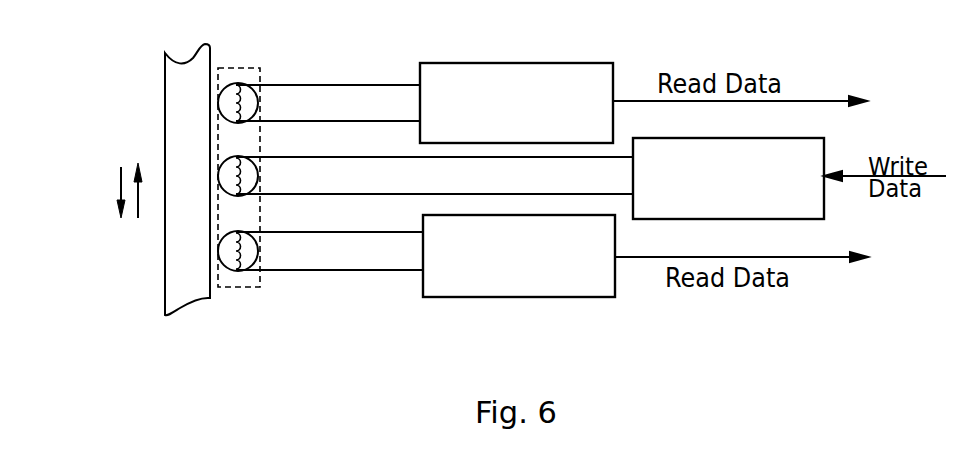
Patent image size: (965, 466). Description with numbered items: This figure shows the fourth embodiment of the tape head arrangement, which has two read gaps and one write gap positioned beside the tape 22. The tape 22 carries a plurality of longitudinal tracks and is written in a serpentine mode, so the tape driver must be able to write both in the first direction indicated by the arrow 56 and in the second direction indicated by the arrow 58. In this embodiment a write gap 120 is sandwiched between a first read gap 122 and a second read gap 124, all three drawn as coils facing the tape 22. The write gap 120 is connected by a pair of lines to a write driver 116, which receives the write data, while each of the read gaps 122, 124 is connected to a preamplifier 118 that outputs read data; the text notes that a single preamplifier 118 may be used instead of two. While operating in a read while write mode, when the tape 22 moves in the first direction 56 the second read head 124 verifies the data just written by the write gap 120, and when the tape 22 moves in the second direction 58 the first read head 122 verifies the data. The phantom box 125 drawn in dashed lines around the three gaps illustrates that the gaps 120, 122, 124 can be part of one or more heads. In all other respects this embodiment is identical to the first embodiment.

The tape 22 is at (190, 63).
The arrow indicating first direction 56 is at (118, 192).
The arrow indicating second direction 58 is at (141, 198).
The write driver 116 is at (814, 150).
The preamplifier 118 is at (568, 67).
The write gap 120 is at (248, 178).
The first read gap 122 is at (246, 84).
The second read gap 124 is at (250, 256).
The phantom box 125 is at (236, 278).